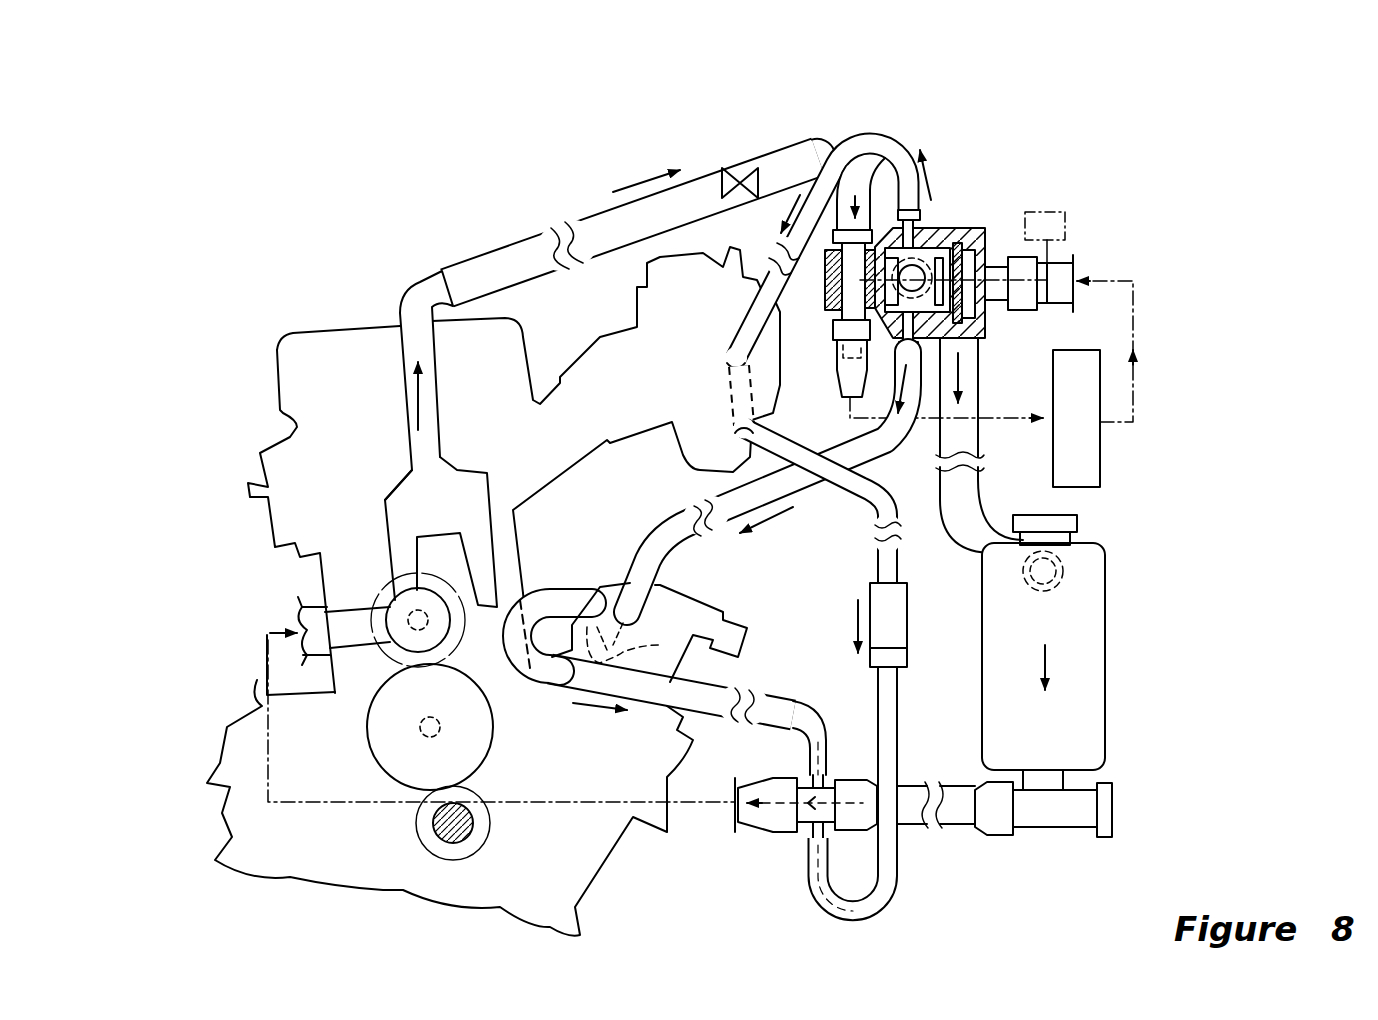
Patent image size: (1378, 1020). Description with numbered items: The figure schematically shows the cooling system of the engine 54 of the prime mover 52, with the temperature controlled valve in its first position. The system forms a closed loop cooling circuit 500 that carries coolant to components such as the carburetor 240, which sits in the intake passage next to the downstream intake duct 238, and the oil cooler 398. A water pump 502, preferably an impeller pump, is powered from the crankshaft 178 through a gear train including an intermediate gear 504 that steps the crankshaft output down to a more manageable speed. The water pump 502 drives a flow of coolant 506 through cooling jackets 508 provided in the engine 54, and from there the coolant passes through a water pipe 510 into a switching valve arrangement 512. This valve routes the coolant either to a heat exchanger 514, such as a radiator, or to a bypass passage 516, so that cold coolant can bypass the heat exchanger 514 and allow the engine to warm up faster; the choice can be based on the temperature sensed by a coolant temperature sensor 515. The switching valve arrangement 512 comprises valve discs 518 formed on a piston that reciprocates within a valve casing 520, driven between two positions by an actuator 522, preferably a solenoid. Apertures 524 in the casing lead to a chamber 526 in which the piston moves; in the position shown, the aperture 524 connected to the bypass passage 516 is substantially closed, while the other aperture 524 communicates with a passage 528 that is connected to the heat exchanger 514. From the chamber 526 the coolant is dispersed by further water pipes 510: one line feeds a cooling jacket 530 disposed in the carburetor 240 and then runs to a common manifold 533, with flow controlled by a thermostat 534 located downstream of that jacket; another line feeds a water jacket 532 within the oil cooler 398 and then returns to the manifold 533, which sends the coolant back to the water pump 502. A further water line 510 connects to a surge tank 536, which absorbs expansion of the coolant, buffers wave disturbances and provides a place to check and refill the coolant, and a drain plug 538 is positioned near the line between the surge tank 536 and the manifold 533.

The prime mover 52 is at (283, 208).
The engine 54 is at (310, 315).
The crankshaft 178 is at (473, 827).
The downstream intake duct 238 is at (570, 360).
The carburetor 240 is at (703, 443).
The oil cooler 398 is at (613, 582).
The closed loop cooling circuit 500 is at (397, 477).
The water pump 502 is at (392, 606).
The intermediate gear 504 is at (370, 750).
The flow of coolant 506 is at (417, 402).
The cooling jackets 508 is at (417, 508).
The water pipe 510 is at (733, 203).
The switching valve arrangement 512 is at (1082, 267).
The heat exchanger 514 is at (1093, 455).
The coolant temperature sensor 515 is at (740, 165).
The bypass passage 516 is at (838, 270).
The valve discs 518 is at (950, 245).
The valve casing 520 is at (960, 265).
The actuator 522 is at (1067, 227).
The apertures 524 is at (983, 290).
The chamber 526 is at (932, 268).
The passage 528 is at (1057, 297).
The cooling jacket 530 is at (727, 403).
The water jacket 532 is at (649, 632).
The common manifold 533 is at (263, 708).
The thermostat 534 is at (902, 627).
The surge tank 536 is at (1093, 693).
The drain plug 538 is at (1113, 807).